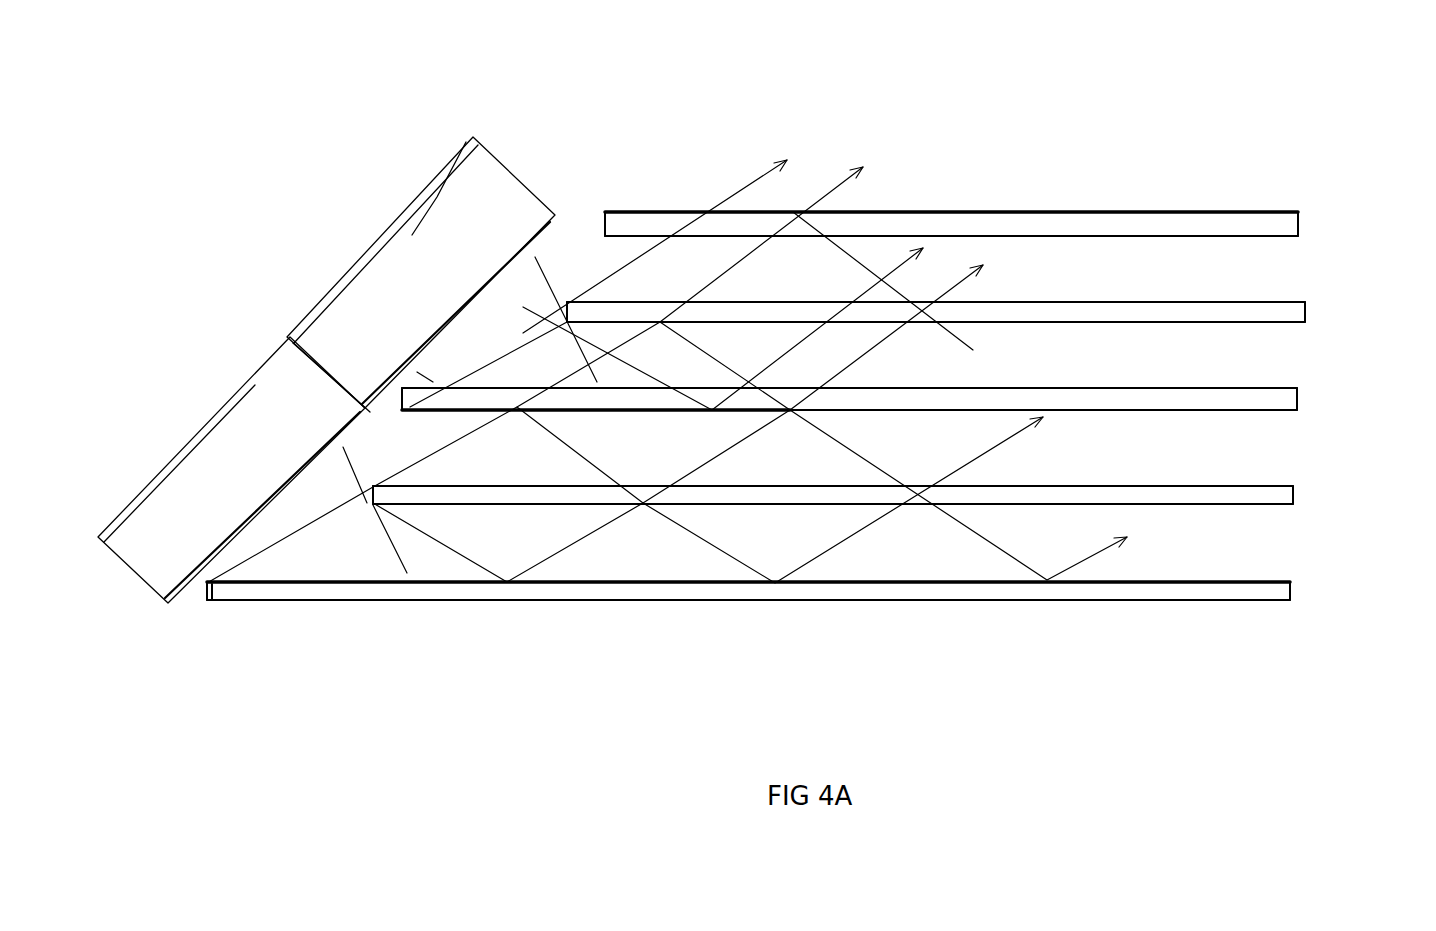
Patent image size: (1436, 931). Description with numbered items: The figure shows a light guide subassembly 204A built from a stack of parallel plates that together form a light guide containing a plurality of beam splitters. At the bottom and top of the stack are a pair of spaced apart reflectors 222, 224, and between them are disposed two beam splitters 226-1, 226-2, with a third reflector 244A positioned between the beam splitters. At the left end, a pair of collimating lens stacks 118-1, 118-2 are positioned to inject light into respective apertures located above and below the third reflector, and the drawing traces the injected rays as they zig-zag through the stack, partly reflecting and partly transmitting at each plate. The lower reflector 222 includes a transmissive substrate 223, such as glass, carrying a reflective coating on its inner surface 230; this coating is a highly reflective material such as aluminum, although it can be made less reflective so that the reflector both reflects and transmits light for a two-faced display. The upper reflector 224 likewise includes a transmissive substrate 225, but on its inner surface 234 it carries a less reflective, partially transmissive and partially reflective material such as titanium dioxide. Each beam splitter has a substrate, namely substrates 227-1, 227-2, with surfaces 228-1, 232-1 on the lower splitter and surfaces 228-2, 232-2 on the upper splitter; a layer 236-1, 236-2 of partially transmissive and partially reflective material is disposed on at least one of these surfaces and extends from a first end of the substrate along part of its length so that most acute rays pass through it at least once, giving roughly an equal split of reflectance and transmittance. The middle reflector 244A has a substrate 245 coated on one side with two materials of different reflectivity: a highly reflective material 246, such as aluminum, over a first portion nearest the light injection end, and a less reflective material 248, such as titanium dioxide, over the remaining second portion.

The subassembly 204A is at (707, 168).
The collimating lens stack 118-1 is at (243, 447).
The collimating lens stack 118-2 is at (447, 267).
The reflector 224 is at (990, 190).
The transmissive substrate 225 is at (1130, 227).
The inner surface 234 is at (1005, 236).
The beam splitter 226-2 is at (988, 318).
The substrate 227-2 is at (1147, 313).
The surface 228-2 is at (1005, 323).
The surface 232-2 is at (1038, 300).
The layer 236-2 is at (777, 323).
The third reflector 244A is at (901, 405).
The substrate 245 is at (1133, 400).
The highly reflective material 246 is at (562, 412).
The less reflective material 248 is at (1075, 413).
The beam splitter 226-1 is at (889, 506).
The substrate 227-1 is at (1132, 495).
The surface 228-1 is at (773, 505).
The surface 232-1 is at (678, 483).
The layer 236-1 is at (423, 507).
The reflector 222 is at (792, 594).
The transmissive substrate 223 is at (1140, 588).
The inner surface 230 is at (590, 572).